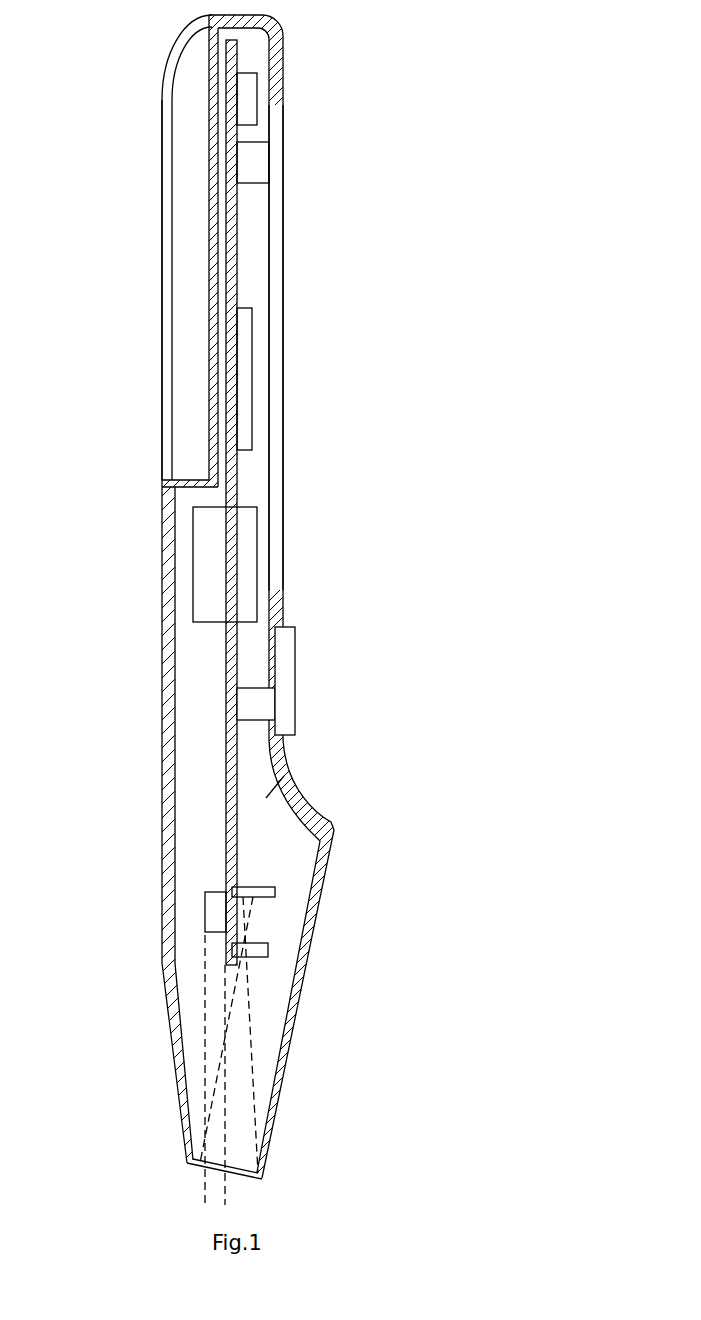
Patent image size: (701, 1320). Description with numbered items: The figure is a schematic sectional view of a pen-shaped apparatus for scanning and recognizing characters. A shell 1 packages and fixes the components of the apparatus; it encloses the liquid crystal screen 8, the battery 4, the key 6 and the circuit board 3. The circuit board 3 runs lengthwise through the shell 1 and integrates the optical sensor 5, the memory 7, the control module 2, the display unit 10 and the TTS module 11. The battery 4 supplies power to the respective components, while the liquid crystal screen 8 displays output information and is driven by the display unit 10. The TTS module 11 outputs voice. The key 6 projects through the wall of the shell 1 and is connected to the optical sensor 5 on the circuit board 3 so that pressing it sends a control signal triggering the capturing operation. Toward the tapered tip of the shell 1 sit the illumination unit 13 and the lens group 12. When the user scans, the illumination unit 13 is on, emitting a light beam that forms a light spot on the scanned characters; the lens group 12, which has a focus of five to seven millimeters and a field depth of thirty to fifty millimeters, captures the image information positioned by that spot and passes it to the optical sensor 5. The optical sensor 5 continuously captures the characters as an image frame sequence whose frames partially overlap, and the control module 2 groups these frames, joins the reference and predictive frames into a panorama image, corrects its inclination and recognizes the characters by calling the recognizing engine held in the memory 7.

The shell 1 is at (168, 818).
The control module 2 is at (213, 547).
The circuit board 3 is at (228, 278).
The battery 4 is at (190, 168).
The optical sensor 5 is at (272, 887).
The key 6 is at (277, 697).
The memory 7 is at (243, 388).
The liquid crystal screen 8 is at (275, 485).
The display unit 10 is at (258, 165).
The TTS module 11 is at (243, 103).
The lens group 12 is at (270, 953).
The illumination unit 13 is at (212, 915).